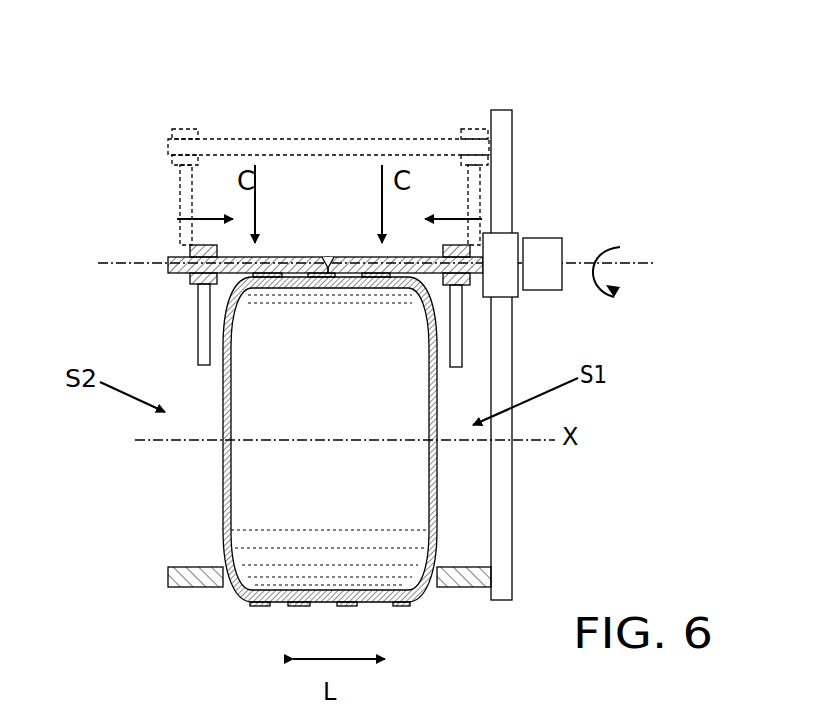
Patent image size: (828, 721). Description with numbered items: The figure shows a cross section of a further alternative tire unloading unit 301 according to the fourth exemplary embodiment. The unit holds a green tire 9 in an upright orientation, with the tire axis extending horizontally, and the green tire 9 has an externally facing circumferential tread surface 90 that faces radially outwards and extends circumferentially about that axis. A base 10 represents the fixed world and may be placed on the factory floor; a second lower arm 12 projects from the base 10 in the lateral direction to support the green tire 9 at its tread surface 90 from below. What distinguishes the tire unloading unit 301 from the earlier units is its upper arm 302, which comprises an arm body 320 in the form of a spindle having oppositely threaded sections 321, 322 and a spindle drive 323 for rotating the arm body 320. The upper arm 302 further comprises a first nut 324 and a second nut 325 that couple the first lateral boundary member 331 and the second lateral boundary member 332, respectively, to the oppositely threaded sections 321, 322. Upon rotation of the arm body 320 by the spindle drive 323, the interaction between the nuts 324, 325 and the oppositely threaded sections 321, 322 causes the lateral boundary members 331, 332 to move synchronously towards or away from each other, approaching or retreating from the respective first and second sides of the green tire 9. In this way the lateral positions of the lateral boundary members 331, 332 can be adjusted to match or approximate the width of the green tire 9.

The tire unloading unit 301 is at (97, 125).
The upper arm 302 is at (270, 103).
The base 10 is at (505, 122).
The spindle drive 323 is at (553, 240).
The first nut 324 is at (458, 245).
The second nut 325 is at (190, 250).
The arm body 320 is at (180, 275).
The threaded section 321 is at (343, 257).
The threaded section 322 is at (275, 257).
The first lateral boundary member 331 is at (456, 332).
The second lateral boundary member 332 is at (196, 338).
The green tire 9 is at (230, 488).
The tread surface 90 is at (250, 605).
The second lower arm 12 is at (455, 588).